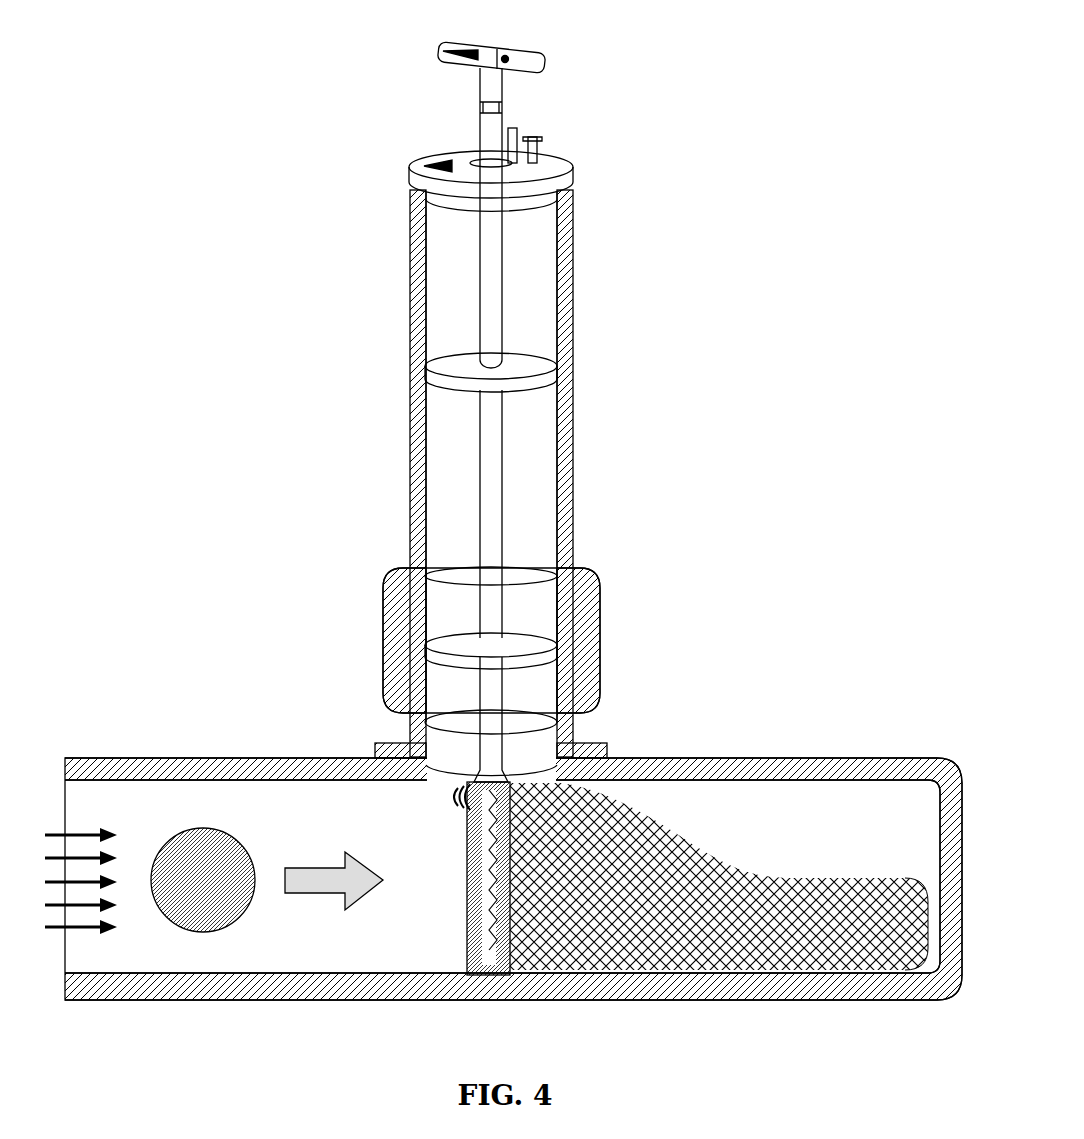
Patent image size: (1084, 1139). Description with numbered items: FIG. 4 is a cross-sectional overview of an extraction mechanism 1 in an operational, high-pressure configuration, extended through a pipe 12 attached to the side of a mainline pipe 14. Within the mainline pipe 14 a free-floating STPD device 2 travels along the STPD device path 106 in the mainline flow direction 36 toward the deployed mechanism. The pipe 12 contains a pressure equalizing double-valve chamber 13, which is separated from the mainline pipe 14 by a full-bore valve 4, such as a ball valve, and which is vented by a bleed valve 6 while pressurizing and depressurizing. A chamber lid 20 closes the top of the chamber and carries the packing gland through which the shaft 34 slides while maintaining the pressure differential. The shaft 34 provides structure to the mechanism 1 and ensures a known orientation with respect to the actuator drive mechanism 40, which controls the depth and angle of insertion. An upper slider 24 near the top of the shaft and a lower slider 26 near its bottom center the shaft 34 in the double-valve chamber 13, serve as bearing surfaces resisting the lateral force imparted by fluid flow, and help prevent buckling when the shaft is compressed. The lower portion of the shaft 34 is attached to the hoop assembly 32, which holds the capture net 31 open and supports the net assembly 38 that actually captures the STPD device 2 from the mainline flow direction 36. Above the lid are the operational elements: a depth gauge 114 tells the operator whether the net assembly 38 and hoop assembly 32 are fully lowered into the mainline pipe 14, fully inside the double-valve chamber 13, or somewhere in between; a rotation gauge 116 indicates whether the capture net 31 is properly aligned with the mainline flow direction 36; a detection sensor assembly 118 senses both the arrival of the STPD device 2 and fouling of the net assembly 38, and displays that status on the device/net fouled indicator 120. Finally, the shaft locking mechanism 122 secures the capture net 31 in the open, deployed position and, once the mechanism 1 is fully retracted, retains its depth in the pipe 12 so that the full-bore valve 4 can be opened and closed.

The extraction mechanism 1 is at (541, 391).
The STPD device 2 is at (200, 827).
The full-bore valve 4 is at (586, 638).
The bleed valve 6 is at (540, 140).
The pipe 12 is at (570, 245).
The double-valve chamber 13 is at (540, 477).
The mainline pipe 14 is at (845, 773).
The chamber lid 20 is at (579, 176).
The upper slider 24 is at (547, 385).
The lower slider 26 is at (530, 639).
The capture net 31 is at (772, 862).
The hoop assembly 32 is at (478, 905).
The shaft 34 is at (383, 425).
The mainline flow direction 36 is at (67, 830).
The net assembly 38 is at (719, 836).
The actuator drive mechanism 40 is at (530, 80).
The STPD device path 106 is at (327, 862).
The depth gauge 114 is at (478, 149).
The rotation gauge 116 is at (455, 42).
The detection sensor assembly 118 is at (441, 798).
The device/net fouled indicator 120 is at (508, 56).
The shaft locking mechanism 122 is at (519, 130).